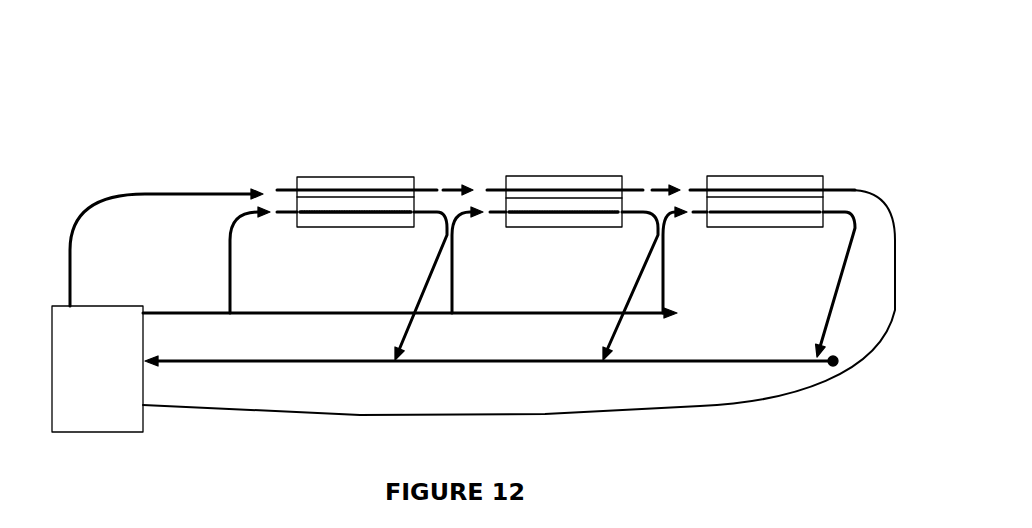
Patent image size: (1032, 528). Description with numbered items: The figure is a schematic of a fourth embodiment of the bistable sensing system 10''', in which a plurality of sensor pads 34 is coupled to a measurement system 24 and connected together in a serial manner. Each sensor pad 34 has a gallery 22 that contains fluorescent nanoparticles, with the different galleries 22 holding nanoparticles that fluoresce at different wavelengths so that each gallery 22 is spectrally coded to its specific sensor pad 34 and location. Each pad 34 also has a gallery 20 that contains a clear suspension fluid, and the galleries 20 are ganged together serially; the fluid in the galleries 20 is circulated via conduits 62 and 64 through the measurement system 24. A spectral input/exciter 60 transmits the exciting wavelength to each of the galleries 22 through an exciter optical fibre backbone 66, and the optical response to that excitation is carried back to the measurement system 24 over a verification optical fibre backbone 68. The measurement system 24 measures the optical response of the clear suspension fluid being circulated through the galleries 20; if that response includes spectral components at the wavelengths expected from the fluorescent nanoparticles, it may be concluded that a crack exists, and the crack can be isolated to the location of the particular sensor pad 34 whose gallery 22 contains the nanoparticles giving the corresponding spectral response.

The bistable sensing system 10''' is at (566, 112).
The gallery 20 is at (325, 187).
The gallery 22 is at (335, 212).
The measurement system 24 is at (103, 431).
The sensor pad 34 is at (391, 132).
The spectral input/exciter 60 is at (165, 313).
The conduit 62 is at (548, 413).
The conduit 64 is at (163, 194).
The exciter optical fibre backbone 66 is at (513, 313).
The verification optical fibre backbone 68 is at (282, 363).